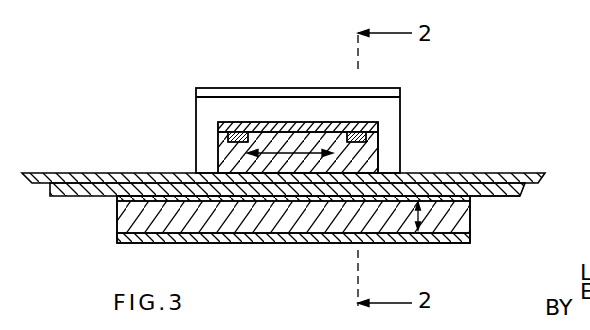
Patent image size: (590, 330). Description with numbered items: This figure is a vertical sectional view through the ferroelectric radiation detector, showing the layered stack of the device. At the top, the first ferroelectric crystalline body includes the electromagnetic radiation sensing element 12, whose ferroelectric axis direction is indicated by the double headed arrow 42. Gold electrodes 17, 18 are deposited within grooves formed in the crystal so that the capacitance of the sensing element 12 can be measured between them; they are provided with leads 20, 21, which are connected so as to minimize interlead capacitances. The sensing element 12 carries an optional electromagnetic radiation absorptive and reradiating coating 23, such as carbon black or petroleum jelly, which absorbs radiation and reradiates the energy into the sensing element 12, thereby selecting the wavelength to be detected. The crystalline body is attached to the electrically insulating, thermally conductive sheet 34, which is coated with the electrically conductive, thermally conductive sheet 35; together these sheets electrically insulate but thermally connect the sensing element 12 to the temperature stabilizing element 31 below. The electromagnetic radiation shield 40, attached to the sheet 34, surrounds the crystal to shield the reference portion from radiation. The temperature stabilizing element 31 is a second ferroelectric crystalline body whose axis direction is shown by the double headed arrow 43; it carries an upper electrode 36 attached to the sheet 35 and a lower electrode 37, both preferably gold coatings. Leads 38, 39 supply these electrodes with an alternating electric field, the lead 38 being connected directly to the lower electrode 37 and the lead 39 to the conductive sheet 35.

The electromagnetic radiation sensing element 12 is at (317, 160).
The electrode 17 is at (236, 133).
The electrode 18 is at (376, 128).
The lead 20 is at (220, 130).
The lead 21 is at (395, 138).
The electromagnetic radiation absorptive and reradiating coating 23 is at (364, 125).
The temperature stabilizing element 31 is at (117, 226).
The electrically insulating, thermally conductive sheet 34 is at (545, 175).
The electrically conductive, thermally conductive sheet 35 is at (528, 188).
The upper electrode 36 is at (470, 196).
The lower electrode 37 is at (130, 243).
The lead 38 is at (430, 243).
The lead 39 is at (498, 192).
The electromagnetic radiation shield 40 is at (268, 88).
The double headed arrow 42 is at (288, 160).
The double headed arrow 43 is at (408, 232).